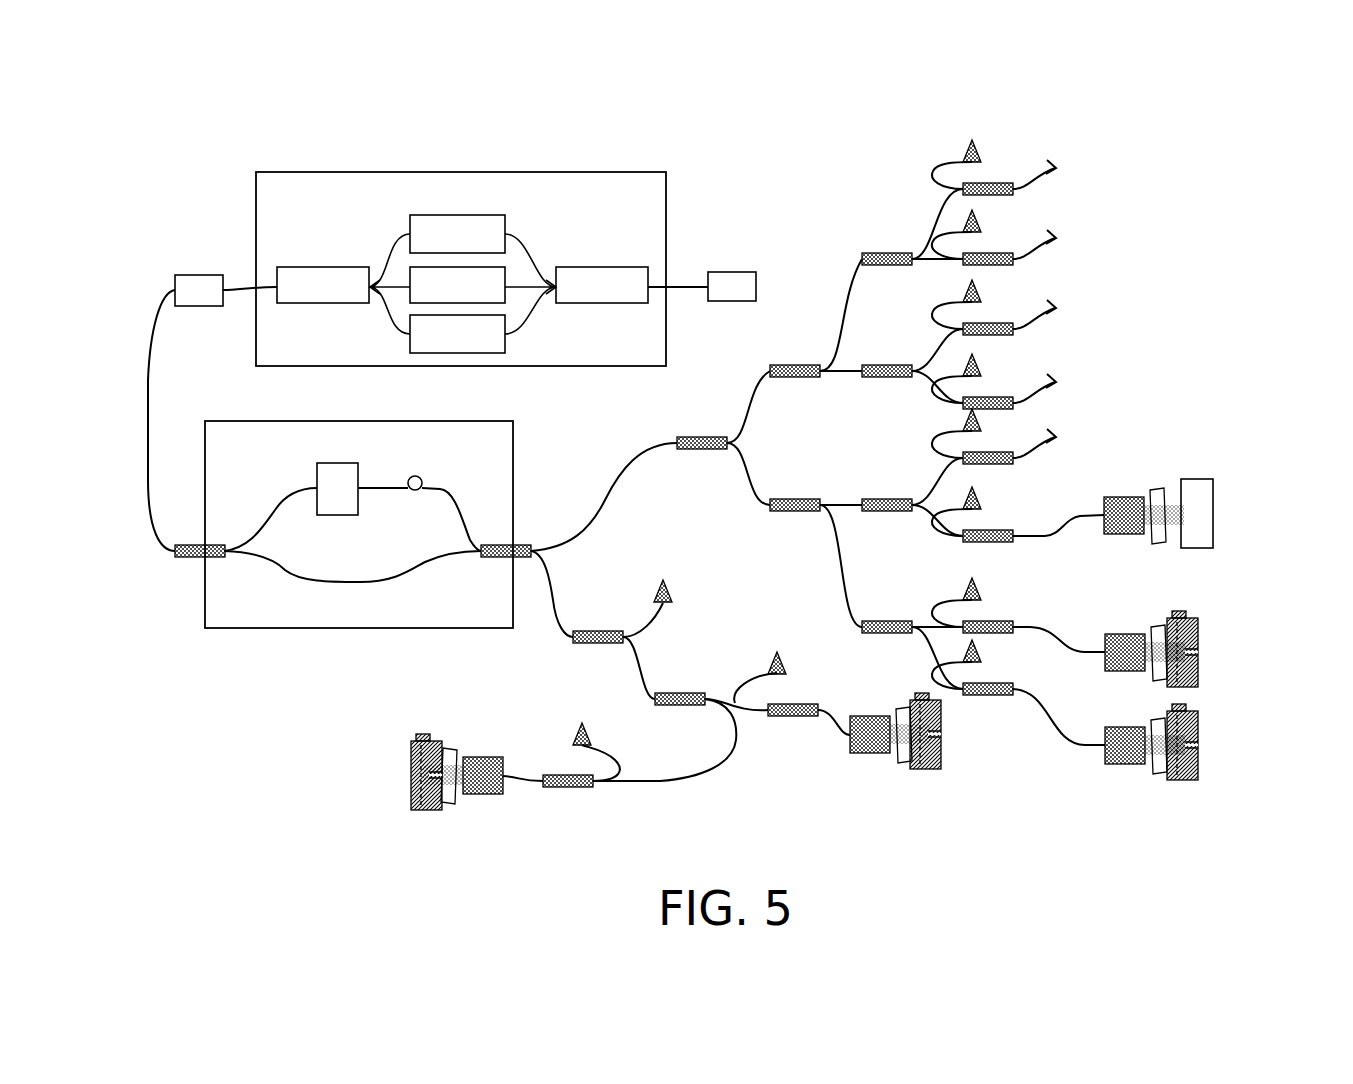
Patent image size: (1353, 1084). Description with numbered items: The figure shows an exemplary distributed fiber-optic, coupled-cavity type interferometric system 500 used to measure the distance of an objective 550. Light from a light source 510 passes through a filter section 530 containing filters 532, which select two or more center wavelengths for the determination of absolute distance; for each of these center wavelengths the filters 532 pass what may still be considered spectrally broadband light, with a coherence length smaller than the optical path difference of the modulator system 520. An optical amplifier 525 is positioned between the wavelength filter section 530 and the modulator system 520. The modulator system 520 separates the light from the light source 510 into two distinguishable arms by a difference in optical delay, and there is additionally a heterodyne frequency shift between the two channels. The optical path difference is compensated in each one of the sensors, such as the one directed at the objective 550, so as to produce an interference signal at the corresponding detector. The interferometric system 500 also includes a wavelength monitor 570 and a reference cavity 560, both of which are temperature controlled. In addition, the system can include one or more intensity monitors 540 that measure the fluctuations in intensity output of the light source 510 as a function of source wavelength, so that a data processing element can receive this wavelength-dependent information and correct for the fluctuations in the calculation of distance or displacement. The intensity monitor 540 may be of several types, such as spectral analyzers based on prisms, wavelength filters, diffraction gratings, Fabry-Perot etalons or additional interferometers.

The interferometric system 500 is at (705, 103).
The light source 510 is at (707, 272).
The modulator system 520 is at (238, 628).
The optical amplifier 525 is at (175, 280).
The filter section 530 is at (461, 219).
The filters 532 is at (448, 215).
The intensity monitor 540 is at (663, 578).
The objective 550 is at (1195, 550).
The reference cavity 560 is at (900, 767).
The wavelength monitor 570 is at (410, 809).